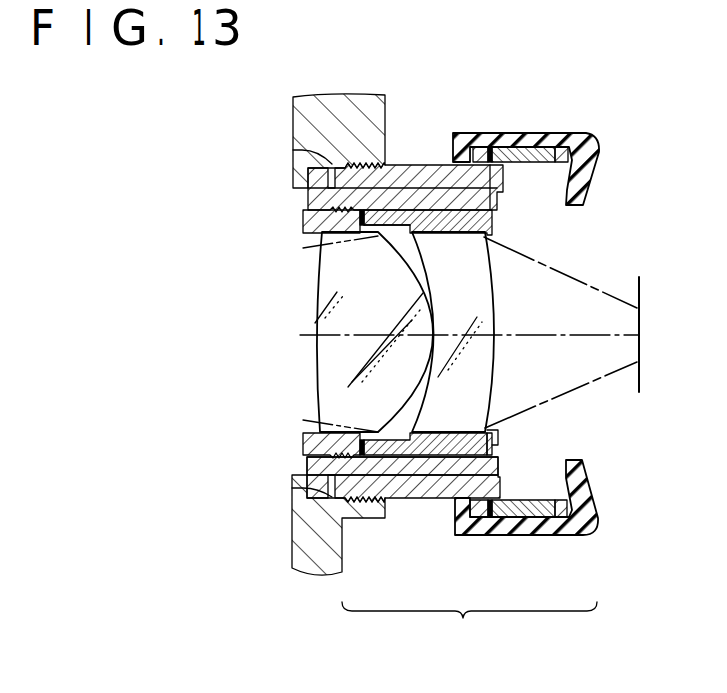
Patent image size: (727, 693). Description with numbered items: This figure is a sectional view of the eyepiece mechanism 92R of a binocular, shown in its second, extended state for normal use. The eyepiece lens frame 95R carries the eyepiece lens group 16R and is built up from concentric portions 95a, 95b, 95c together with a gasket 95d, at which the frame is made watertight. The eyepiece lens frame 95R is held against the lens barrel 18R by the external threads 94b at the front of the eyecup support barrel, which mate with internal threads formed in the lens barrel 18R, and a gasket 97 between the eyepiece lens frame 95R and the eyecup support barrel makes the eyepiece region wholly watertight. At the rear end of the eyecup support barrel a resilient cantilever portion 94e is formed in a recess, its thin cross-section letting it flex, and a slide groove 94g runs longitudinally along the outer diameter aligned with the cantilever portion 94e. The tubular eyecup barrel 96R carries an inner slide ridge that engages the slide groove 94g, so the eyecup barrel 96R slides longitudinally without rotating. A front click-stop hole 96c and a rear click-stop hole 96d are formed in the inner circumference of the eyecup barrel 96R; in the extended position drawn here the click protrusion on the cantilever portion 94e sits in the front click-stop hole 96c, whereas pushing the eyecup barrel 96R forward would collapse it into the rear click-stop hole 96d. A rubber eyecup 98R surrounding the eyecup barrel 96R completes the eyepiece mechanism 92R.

The lens barrel 18R is at (368, 103).
The external threads 94b is at (298, 150).
The top slide groove 94g is at (417, 163).
The top cantilever portion 94e is at (503, 176).
The gasket 97 is at (312, 490).
The concentric portion 95a is at (340, 456).
The concentric portion 95b is at (403, 462).
The concentric portion 95c is at (430, 448).
The gasket 95d is at (495, 452).
The eyepiece lens frame 95R is at (469, 625).
The eyepiece lens group 16R is at (483, 394).
The eyecup barrel 96R is at (521, 147).
The top front click-stop hole 96c is at (494, 146).
The top rear click-stop hole 96d is at (562, 147).
The rubber eyecup 98R is at (598, 152).
The eyepiece mechanism 92R is at (600, 515).